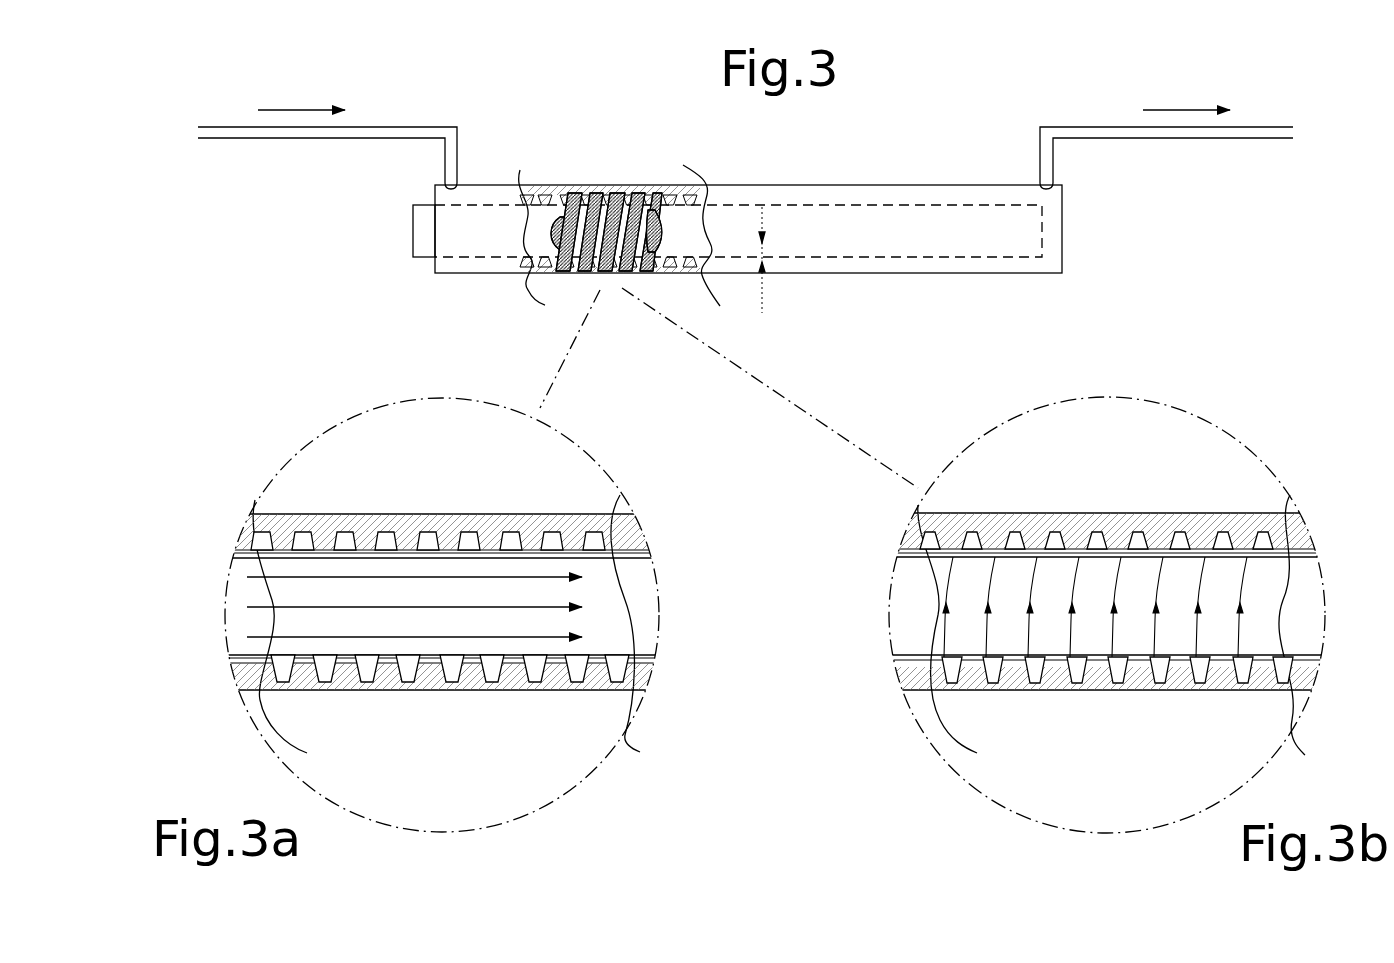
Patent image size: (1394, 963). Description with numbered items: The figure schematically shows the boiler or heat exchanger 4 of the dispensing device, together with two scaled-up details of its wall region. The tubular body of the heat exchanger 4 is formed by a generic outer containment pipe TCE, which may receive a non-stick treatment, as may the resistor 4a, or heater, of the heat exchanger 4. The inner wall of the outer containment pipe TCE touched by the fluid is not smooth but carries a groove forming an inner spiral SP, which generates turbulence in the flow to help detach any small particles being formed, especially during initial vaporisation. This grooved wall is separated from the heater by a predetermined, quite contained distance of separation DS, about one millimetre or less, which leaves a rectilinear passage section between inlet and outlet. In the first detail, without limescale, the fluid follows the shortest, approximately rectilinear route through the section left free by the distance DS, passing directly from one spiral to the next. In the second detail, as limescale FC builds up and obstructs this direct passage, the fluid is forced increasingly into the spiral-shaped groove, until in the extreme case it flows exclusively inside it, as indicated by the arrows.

In FIG. 3, the boiler or heat exchanger 4 is at (944, 153).
In FIG. 3A, the boiler or heat exchanger 4 is at (426, 460).
In FIG. 3B, the boiler or heat exchanger 4 is at (1148, 444).
In FIG. 3, the resistor 4a is at (364, 237).
In FIG. 3, the outer containment pipe TCE is at (639, 192).
In FIG. 3A, the outer containment pipe TCE is at (360, 526).
In FIG. 3B, the outer containment pipe TCE is at (1209, 510).
In FIG. 3, the distance of separation DS is at (766, 297).
In FIG. 3B, the limescale FC is at (1026, 533).
In FIG. 3A, the inner spiral SP is at (505, 688).
In FIG. 3B, the inner spiral SP is at (1063, 696).